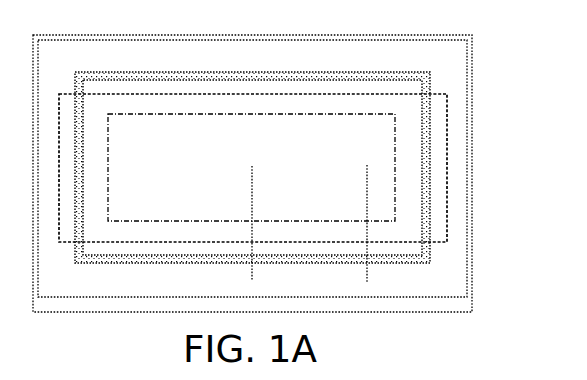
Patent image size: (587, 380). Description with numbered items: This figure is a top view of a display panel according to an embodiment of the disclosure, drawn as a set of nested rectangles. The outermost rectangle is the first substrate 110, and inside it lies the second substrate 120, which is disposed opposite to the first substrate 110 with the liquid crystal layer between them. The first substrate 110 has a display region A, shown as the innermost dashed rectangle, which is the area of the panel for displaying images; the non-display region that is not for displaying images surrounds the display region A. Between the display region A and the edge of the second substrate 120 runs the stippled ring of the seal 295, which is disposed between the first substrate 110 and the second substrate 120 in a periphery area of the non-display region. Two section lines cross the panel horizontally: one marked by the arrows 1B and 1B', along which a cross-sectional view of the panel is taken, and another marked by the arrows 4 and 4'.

The first substrate 110 is at (474, 307).
The second substrate 120 is at (471, 257).
The seal 295 is at (420, 73).
The display region A is at (397, 145).
The section line 4 is at (211, 217).
The section line 4' is at (210, 278).
The cross-sectional line 1B-1B' (first end) 1B is at (441, 281).
The cross-sectional line 1B-1B' (second end) 1B' is at (444, 218).